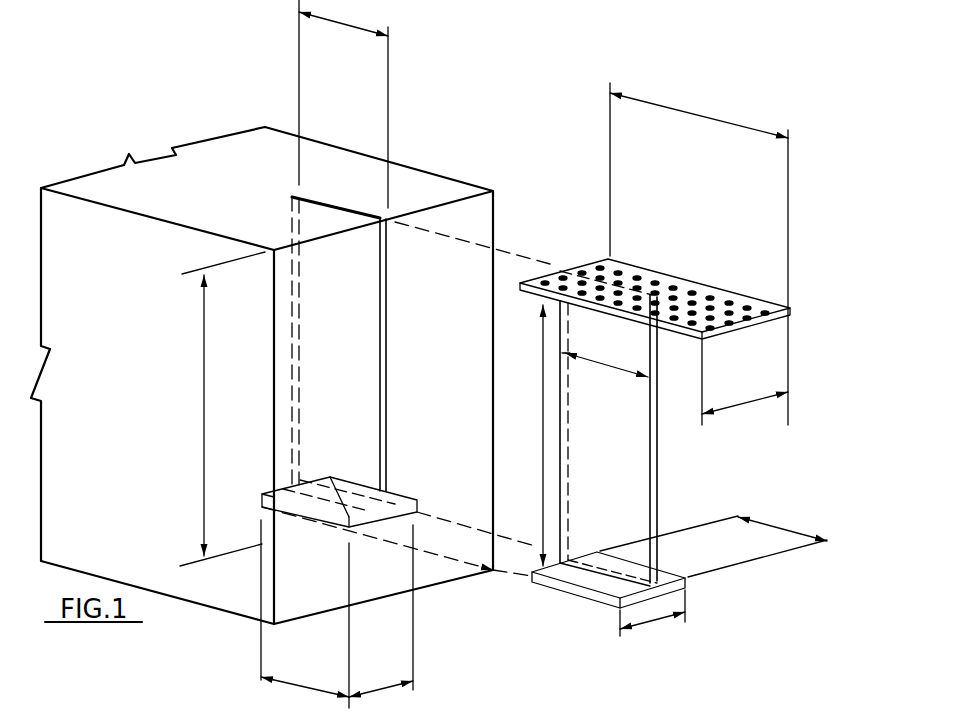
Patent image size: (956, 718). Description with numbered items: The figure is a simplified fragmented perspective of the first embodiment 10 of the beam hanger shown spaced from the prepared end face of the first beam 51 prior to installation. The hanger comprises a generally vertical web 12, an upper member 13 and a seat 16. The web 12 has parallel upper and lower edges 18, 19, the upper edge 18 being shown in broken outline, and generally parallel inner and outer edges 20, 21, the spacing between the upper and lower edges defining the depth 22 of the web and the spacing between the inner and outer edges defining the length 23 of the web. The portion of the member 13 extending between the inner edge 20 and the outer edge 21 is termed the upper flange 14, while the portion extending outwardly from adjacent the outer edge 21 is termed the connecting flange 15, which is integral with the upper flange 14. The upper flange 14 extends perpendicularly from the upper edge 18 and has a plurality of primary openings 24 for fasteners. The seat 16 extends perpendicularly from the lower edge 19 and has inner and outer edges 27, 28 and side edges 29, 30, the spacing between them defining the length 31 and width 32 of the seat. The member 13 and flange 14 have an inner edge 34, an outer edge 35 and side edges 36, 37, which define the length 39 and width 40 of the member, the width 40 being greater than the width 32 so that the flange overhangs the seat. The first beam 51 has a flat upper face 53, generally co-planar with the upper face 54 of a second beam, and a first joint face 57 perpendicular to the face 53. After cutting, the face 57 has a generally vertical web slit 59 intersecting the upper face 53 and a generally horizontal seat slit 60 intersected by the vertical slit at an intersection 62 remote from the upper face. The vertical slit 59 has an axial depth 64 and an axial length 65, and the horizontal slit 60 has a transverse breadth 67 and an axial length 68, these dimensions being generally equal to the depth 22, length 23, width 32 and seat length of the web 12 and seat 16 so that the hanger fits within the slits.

The first embodiment of beam hanger 10 is at (582, 226).
The web 12 is at (624, 471).
The upper member 13 is at (655, 278).
The upper flange 14 is at (637, 265).
The connecting flange 15 is at (796, 303).
The seat 16 is at (550, 588).
The upper edge of web 18 is at (582, 260).
The lower edge of web 19 is at (657, 565).
The inner edge of web 20 is at (563, 508).
The outer edge of web 21 is at (658, 482).
The depth of web 22 is at (543, 440).
The length of web 23 is at (632, 368).
The primary openings 24 is at (612, 262).
The inner edge of seat 27 is at (541, 558).
The outer edge of seat 28 is at (688, 600).
The side edge of seat 29 is at (662, 572).
The side edge of seat 30 is at (583, 592).
The length of seat 31 is at (713, 538).
The width of seat 32 is at (650, 625).
The inner edge of upper member 34 is at (592, 266).
The outer edge of upper member 35 is at (791, 315).
The side edge of upper member 36 is at (678, 340).
The side edge of upper member 37 is at (697, 283).
The length of upper member 39 is at (676, 108).
The width of upper member 40 is at (725, 406).
The first beam 51 is at (405, 165).
The upper face of first beam 53 is at (218, 204).
The upper face of second beam 54 is at (416, 713).
The first joint face 57 is at (471, 392).
The vertical web slit 59 is at (386, 327).
The horizontal seat slit 60 is at (413, 500).
The intersection of slits 62 is at (388, 503).
The axial depth of vertical slit 64 is at (203, 462).
The axial length of vertical slit 65 is at (372, 28).
The transverse breadth of horizontal slit 67 is at (385, 690).
The axial length of horizontal slit 68 is at (308, 688).